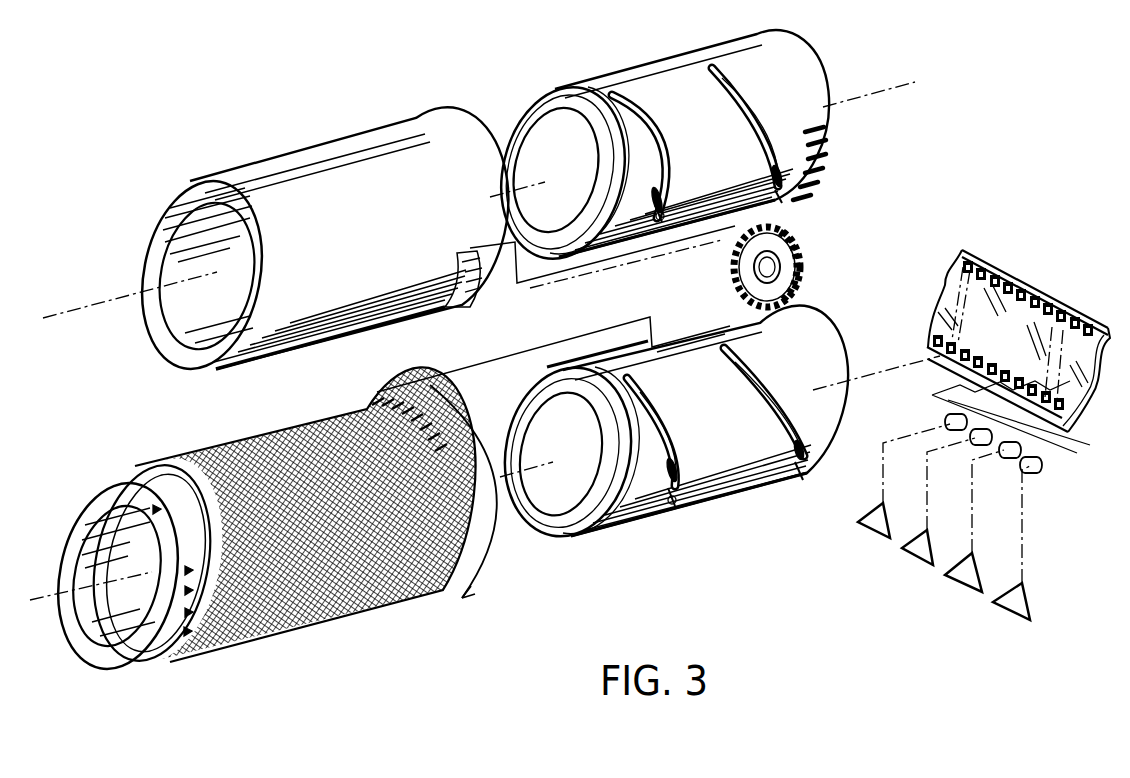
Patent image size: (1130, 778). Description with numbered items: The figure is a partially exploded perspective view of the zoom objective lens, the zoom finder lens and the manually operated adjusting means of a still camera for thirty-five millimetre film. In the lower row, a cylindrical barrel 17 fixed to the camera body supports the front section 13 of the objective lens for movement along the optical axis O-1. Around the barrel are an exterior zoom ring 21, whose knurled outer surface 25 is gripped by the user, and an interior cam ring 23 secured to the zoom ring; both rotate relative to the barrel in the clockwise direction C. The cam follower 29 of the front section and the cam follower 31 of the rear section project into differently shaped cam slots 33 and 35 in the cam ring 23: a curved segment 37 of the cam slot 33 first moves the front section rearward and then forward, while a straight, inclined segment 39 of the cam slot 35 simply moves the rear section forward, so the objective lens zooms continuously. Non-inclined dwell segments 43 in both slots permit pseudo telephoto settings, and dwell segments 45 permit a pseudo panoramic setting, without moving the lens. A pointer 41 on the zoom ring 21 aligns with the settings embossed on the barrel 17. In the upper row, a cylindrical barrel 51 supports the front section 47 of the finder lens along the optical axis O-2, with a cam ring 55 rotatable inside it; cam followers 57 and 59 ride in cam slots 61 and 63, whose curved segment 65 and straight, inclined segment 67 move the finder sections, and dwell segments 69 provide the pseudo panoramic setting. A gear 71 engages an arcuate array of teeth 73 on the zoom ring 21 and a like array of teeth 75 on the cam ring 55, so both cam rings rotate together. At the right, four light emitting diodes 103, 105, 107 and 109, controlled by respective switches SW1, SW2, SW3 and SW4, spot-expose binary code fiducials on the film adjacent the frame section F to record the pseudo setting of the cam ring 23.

The front section of the objective lens 13 is at (545, 523).
The cylindrical barrel 17 is at (120, 670).
The zoom ring 21 is at (259, 542).
The cam ring 23 is at (669, 443).
The knurled outer surface 25 is at (320, 638).
The cam follower 29 is at (674, 492).
The cam follower 31 is at (789, 452).
The cam slot 33 is at (655, 420).
The cam slot 35 is at (758, 400).
The curved segment 37 is at (676, 455).
The straight, inclined segment 39 is at (777, 427).
The pointer 41 is at (157, 577).
The dwell segments 43 is at (638, 391).
The dwell segments 45 is at (671, 507).
The front section of the finder lens 47 is at (522, 158).
The cylindrical barrel 51 is at (263, 163).
The cam ring 55 is at (670, 155).
The cam follower 57 is at (663, 212).
The cam follower 59 is at (771, 165).
The cam slot 61 is at (648, 121).
The cam slot 63 is at (733, 97).
The curved segment 65 is at (660, 168).
The straight, inclined segment 67 is at (752, 118).
The dwell segments 69 is at (660, 220).
The gear 71 is at (808, 267).
The arcuate array of teeth 73 is at (380, 393).
The array of teeth 75 is at (825, 150).
The light emitting diode 103 is at (950, 421).
The light emitting diode 105 is at (975, 440).
The light emitting diode 107 is at (1003, 452).
The light emitting diode 109 is at (1030, 472).
The switch SW1 is at (866, 530).
The switch SW2 is at (908, 556).
The switch SW3 is at (950, 582).
The switch SW4 is at (997, 606).
The frame section of the film F is at (1017, 327).
The optical axis O-1 is at (862, 376).
The optical axis O-2 is at (895, 84).
The clockwise direction C is at (463, 503).